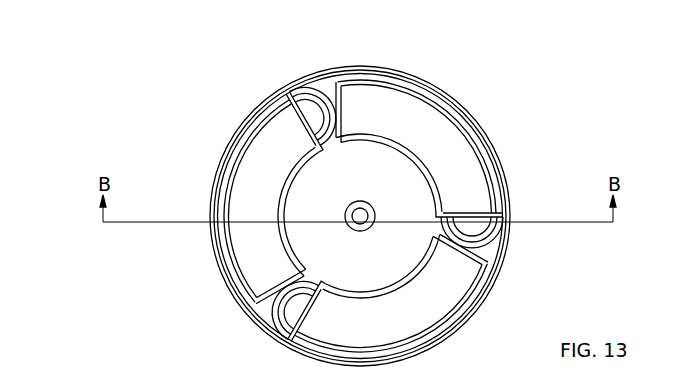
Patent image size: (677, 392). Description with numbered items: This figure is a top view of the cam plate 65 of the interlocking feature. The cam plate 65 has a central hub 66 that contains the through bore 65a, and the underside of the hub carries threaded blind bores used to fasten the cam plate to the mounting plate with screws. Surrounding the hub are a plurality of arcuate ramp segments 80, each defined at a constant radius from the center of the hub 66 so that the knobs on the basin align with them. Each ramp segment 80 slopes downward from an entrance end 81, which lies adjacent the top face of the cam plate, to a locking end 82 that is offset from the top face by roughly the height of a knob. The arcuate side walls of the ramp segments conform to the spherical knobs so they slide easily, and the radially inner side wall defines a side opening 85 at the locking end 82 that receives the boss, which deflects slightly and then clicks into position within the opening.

The cam plate 65 is at (468, 115).
The through bore 65a is at (362, 211).
The central hub 66 is at (325, 185).
The arcuate ramp segments 80 is at (255, 250).
The entrance end 81 is at (358, 108).
The locking end 82 is at (483, 221).
The side opening 85 is at (307, 287).